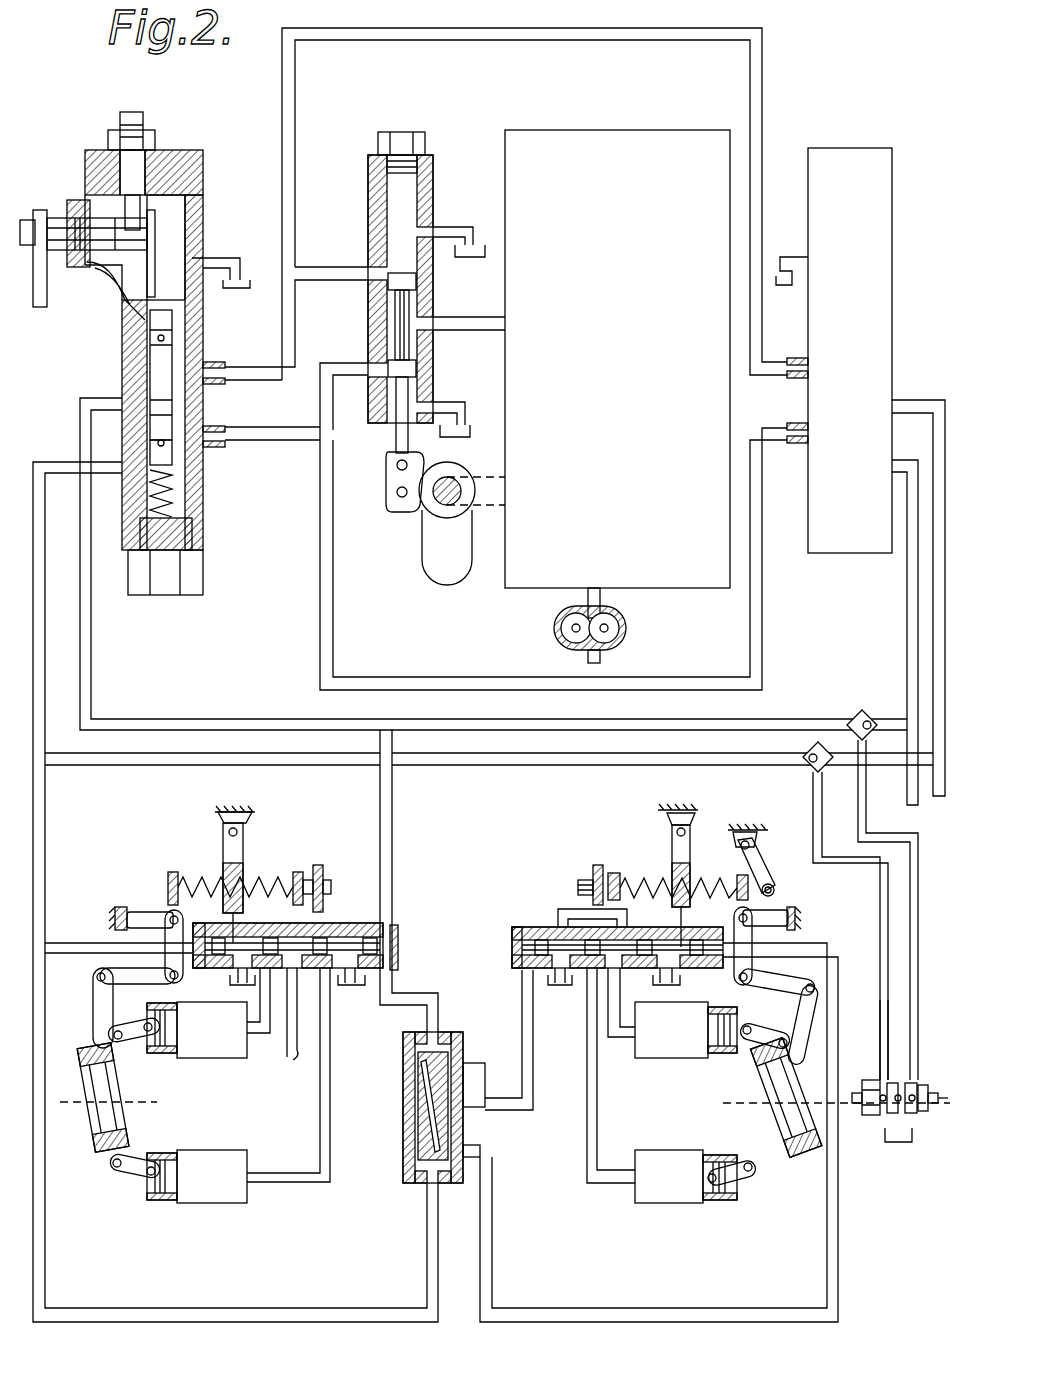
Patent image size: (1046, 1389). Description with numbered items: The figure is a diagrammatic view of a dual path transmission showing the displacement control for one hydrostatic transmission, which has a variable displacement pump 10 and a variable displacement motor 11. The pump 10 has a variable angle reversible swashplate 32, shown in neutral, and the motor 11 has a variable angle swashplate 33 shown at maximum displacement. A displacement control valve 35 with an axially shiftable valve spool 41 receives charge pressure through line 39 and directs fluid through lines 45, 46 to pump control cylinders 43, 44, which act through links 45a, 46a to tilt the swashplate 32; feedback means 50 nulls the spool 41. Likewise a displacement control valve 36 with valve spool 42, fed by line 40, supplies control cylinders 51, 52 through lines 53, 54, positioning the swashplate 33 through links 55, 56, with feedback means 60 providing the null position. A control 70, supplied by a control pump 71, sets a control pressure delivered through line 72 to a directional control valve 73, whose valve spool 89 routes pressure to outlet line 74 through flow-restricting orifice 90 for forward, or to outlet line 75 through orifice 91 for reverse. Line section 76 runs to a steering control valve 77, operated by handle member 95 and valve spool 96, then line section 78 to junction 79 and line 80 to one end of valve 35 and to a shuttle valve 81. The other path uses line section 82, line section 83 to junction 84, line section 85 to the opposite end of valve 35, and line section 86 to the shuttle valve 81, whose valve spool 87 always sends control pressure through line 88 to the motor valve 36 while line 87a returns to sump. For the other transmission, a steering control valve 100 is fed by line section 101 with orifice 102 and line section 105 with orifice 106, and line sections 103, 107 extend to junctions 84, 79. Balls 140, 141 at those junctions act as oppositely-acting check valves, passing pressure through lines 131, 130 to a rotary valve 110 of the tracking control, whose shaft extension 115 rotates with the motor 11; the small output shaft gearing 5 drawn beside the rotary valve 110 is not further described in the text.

The output shaft gearing 5 is at (912, 1145).
The pump 10 is at (245, 1046).
The motor 11 is at (725, 1035).
The variable angle reversible swashplate 32 is at (97, 1155).
The variable angle swashplate 33 is at (792, 1148).
The displacement control valve 35 is at (405, 925).
The displacement control valve 36 is at (523, 927).
The line 39 is at (296, 1062).
The line 40 is at (568, 909).
The valve spool 41 is at (345, 937).
The valve spool 42 is at (545, 978).
The pump control cylinder 43 is at (208, 1058).
The pump control cylinder 44 is at (208, 1200).
The line 45 is at (262, 1048).
The link 45a is at (140, 1058).
The line 46 is at (331, 1076).
The link 46a is at (138, 1158).
The feedback means 50 is at (303, 837).
The control cylinder 51 is at (672, 1060).
The control cylinder 52 is at (668, 1156).
The line 53 is at (625, 1050).
The line 54 is at (587, 1168).
The link 55 is at (752, 1042).
The link 56 is at (745, 1185).
The feedback means 60 is at (715, 813).
The control 70 is at (636, 350).
The control pump 71 is at (622, 632).
The line 72 is at (470, 318).
The directional control valve 73 is at (432, 168).
The outlet line 74 is at (334, 273).
The outlet line 75 is at (345, 363).
The line section 76 is at (255, 367).
The steering control valve 77 is at (208, 162).
The line section 78 is at (80, 400).
The junction 79 is at (850, 718).
The line 80 is at (393, 822).
The shuttle valve 81 is at (450, 1035).
The line section 82 is at (258, 440).
The line section 83 is at (35, 472).
The junction 84 is at (815, 775).
The line section 85 is at (70, 945).
The line section 86 is at (370, 1310).
The valve spool 87 is at (420, 1160).
The line 87a is at (533, 1080).
The line 88 is at (493, 1233).
The valve spool 89 is at (405, 352).
The flow-restricting orifice 90 is at (214, 362).
The flow-restricting orifice 91 is at (222, 430).
The handle member 95 is at (45, 210).
The valve spool 96 is at (150, 318).
The steering control valve 100 is at (868, 152).
The line section 101 is at (765, 82).
The orifice 102 is at (793, 358).
The line section 103 is at (906, 402).
The line section 105 is at (763, 580).
The orifice 106 is at (795, 444).
The line section 107 is at (907, 615).
The rotary valve 110 is at (895, 1123).
The shaft extension 115 is at (858, 1090).
The line 130 is at (878, 886).
The line 131 is at (918, 897).
The ball 140 is at (866, 712).
The ball check 141 is at (805, 762).